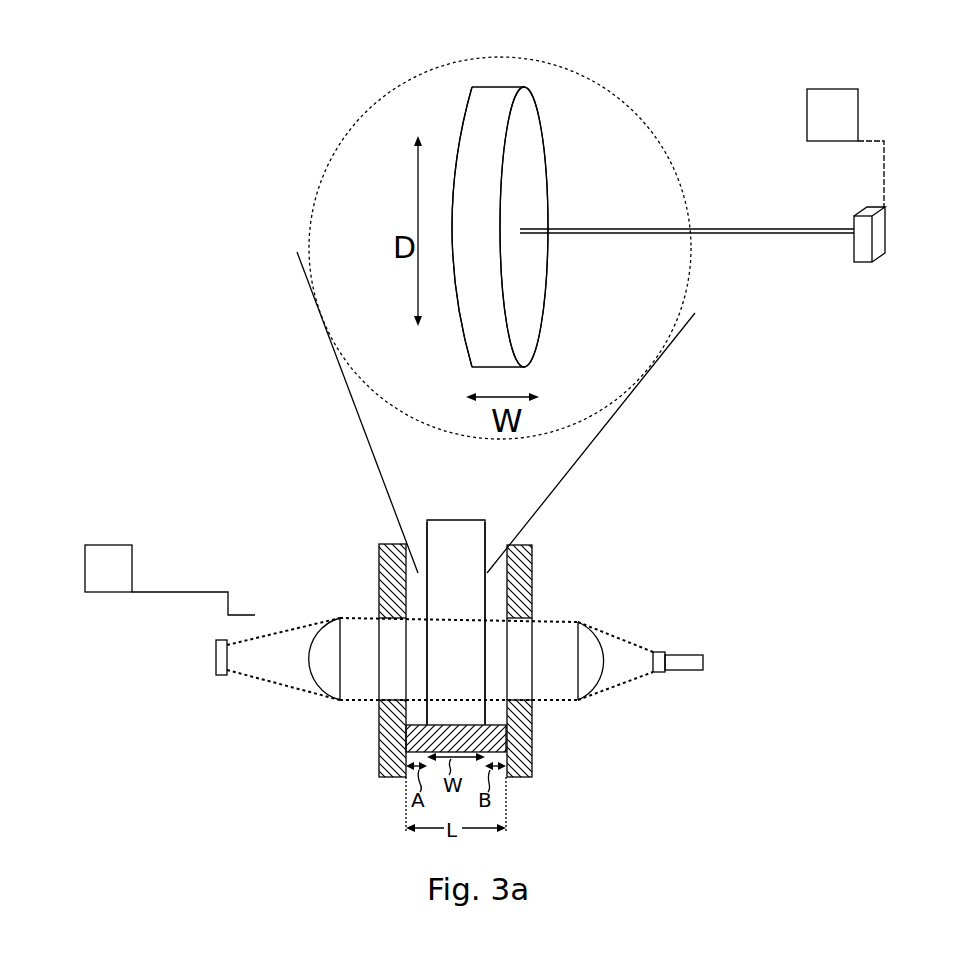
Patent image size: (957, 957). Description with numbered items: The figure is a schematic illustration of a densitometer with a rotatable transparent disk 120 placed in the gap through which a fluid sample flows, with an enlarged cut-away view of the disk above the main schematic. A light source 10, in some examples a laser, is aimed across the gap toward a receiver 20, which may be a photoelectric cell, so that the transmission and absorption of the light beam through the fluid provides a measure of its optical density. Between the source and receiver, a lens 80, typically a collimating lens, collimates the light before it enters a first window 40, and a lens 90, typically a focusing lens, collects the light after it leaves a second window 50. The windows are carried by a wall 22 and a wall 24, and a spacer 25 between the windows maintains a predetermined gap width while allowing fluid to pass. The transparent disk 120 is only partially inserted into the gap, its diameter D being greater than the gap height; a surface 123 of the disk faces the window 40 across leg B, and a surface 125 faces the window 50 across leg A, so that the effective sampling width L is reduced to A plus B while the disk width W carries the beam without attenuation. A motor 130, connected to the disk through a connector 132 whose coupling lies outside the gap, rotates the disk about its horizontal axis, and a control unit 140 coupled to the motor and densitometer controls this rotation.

The light source 10 is at (681, 676).
The receiver 20 is at (216, 657).
The wall 22 is at (522, 778).
The wall 24 is at (379, 769).
The spacer 25 is at (533, 728).
The first window 40 is at (532, 690).
The second window 50 is at (380, 690).
The lens 80 is at (625, 686).
The lens 90 is at (331, 621).
The transparent disk 120 is at (426, 346).
The surface 123 is at (452, 193).
The surface 125 is at (537, 98).
The motor 130 is at (878, 240).
The connector 132 is at (830, 231).
The control unit 140 is at (818, 120).